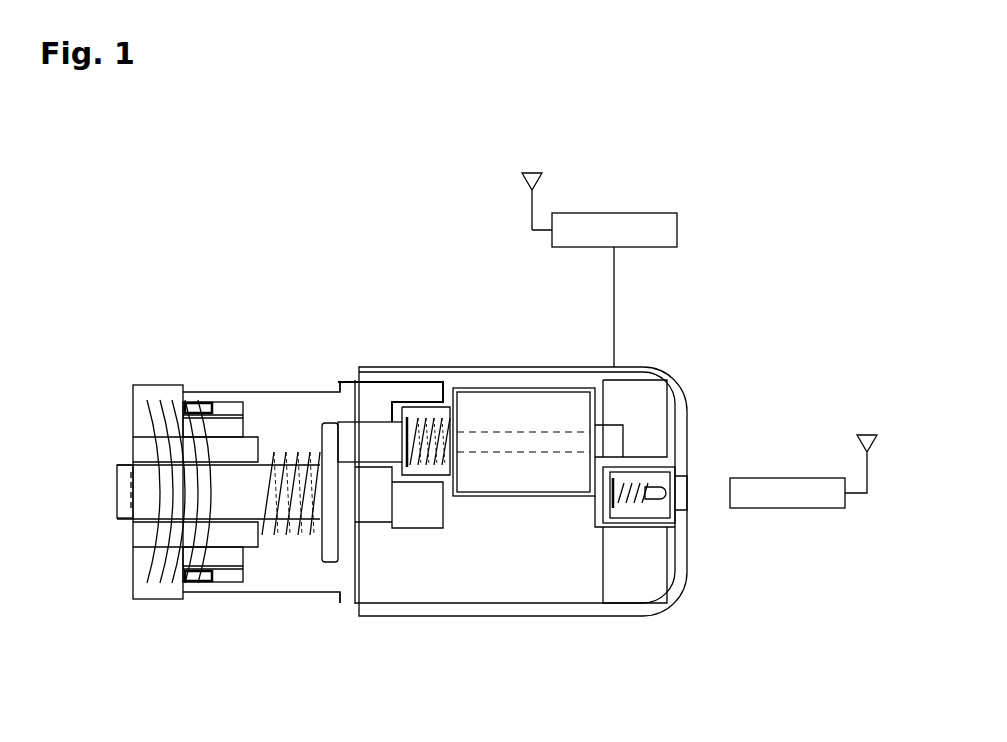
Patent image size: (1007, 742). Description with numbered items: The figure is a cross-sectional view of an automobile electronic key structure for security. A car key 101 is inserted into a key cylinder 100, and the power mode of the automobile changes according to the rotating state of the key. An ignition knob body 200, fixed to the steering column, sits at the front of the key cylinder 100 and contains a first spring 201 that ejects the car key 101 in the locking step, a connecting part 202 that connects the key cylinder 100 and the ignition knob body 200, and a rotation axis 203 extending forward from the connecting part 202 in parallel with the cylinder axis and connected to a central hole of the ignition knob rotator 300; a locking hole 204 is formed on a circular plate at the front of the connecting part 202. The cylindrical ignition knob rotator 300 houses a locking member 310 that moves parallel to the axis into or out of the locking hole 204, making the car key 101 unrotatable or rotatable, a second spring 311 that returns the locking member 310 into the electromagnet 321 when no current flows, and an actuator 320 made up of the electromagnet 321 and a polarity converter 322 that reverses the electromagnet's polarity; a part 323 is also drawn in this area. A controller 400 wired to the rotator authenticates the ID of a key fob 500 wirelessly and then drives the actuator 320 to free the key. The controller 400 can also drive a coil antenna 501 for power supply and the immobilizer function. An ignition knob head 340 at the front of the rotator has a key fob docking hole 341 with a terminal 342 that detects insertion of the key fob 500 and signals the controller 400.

The key cylinder 100 is at (128, 585).
The car key 101 is at (122, 495).
The coil antenna 501 is at (153, 422).
The ignition knob body 200 is at (284, 600).
The first spring 201 is at (240, 400).
The connecting part 202 is at (277, 448).
The rotation axis 203 is at (372, 510).
The locking hole 204 is at (328, 423).
The ignition knob rotator 300 is at (463, 623).
The locking member 310 is at (378, 424).
The second spring 311 is at (440, 421).
The actuator 320 is at (517, 382).
The electromagnet 321 is at (549, 396).
The polarity converter 322 is at (503, 391).
The drive rod 323 is at (590, 303).
The ignition knob head 340 is at (678, 572).
The key fob docking hole 341 is at (678, 498).
The terminal 342 is at (613, 503).
The controller 400 is at (646, 213).
The key fob 500 is at (792, 515).